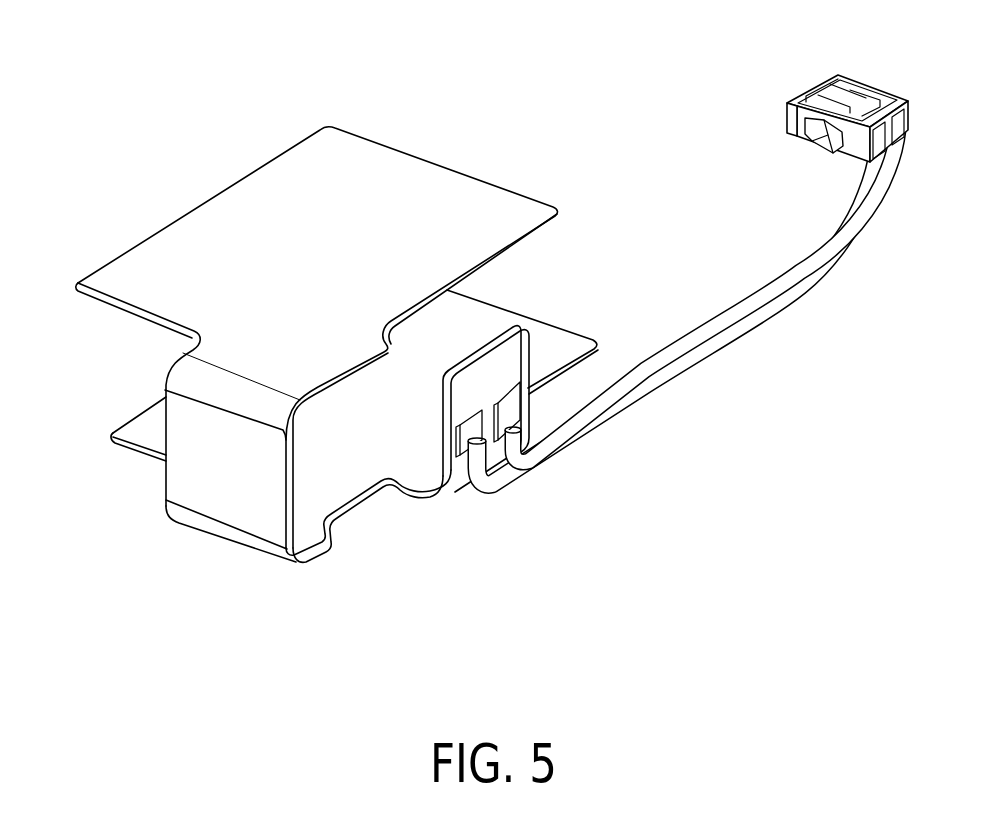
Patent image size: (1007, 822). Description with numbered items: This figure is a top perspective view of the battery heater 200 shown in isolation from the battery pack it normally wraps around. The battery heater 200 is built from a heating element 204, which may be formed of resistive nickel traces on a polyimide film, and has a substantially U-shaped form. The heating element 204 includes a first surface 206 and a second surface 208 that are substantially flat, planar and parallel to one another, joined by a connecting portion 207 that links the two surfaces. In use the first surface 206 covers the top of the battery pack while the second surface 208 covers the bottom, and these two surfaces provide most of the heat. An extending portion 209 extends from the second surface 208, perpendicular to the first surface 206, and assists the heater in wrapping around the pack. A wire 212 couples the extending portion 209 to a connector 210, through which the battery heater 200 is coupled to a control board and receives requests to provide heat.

The battery heater 200 is at (128, 132).
The heating element 204 is at (433, 192).
The first surface 206 is at (140, 268).
The connecting portion 207 is at (283, 530).
The second surface 208 is at (142, 433).
The extending portion 209 is at (522, 360).
The connector 210 is at (826, 74).
The wire 212 is at (747, 320).